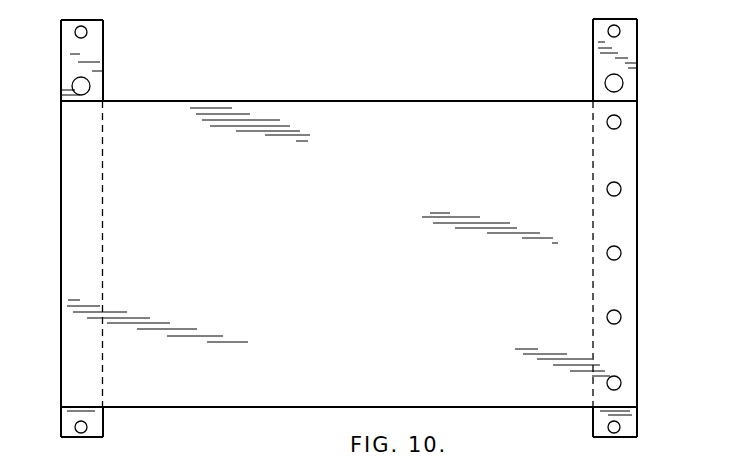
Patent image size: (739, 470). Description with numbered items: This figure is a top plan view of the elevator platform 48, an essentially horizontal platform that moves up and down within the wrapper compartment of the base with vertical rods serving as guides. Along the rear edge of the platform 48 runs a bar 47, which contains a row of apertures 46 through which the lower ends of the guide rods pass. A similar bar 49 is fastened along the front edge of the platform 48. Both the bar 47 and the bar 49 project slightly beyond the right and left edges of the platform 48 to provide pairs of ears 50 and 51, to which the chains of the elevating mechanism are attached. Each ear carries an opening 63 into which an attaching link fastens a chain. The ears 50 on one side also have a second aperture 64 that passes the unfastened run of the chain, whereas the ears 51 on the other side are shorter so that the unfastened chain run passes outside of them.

The apertures 46 is at (617, 311).
The bar 47 is at (628, 419).
The elevator platform 48 is at (349, 228).
The bar 49 is at (103, 70).
The ears 50 is at (598, 52).
The ears 51 is at (93, 421).
The opening 63 is at (88, 32).
The second aperture 64 is at (82, 90).